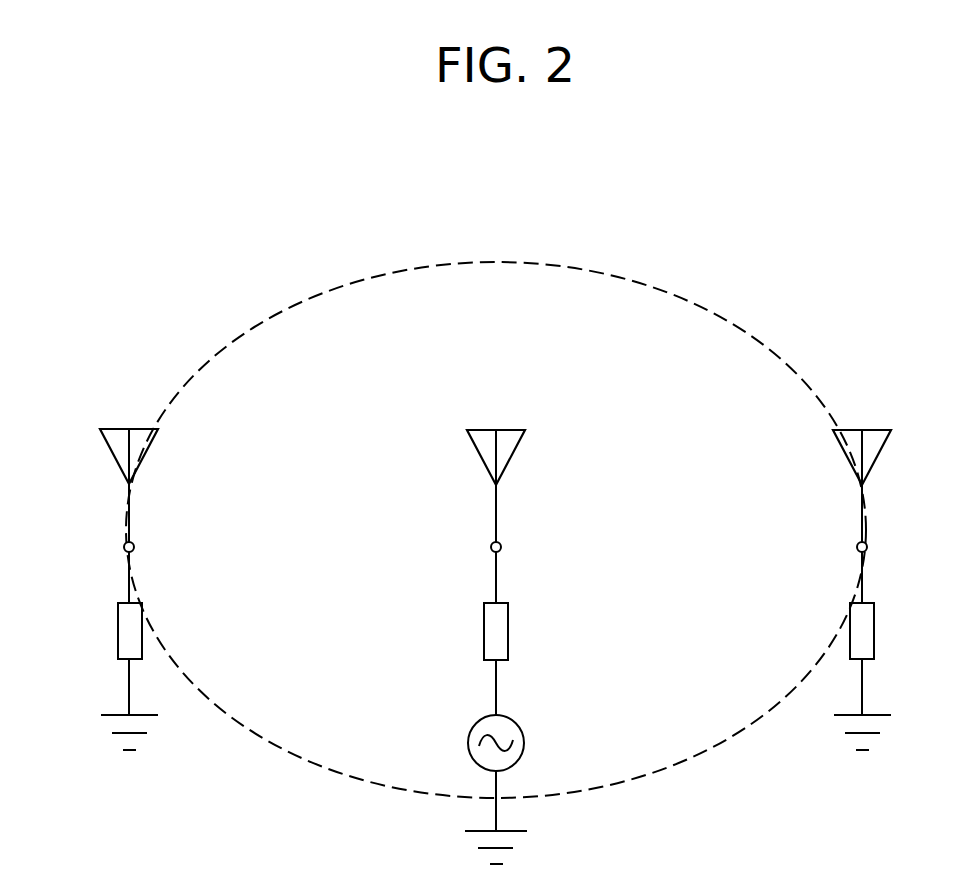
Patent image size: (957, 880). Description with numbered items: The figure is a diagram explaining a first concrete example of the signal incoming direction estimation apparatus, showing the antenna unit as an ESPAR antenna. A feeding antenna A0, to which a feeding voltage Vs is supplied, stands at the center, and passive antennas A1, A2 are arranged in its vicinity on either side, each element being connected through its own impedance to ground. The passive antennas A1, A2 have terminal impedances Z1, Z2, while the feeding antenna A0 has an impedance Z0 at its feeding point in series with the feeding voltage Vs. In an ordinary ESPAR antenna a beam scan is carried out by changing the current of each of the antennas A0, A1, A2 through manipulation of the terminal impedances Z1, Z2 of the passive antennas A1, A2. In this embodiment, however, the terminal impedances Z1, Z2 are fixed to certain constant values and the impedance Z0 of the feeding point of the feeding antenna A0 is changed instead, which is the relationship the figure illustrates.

The feeding antenna A0 is at (480, 516).
The passive antenna A1 is at (110, 516).
The passive antenna A2 is at (880, 516).
The impedance of the feeding point Z0 is at (471, 659).
The terminal impedance Z1 is at (112, 676).
The terminal impedance Z2 is at (880, 676).
The feeding voltage Vs is at (481, 789).